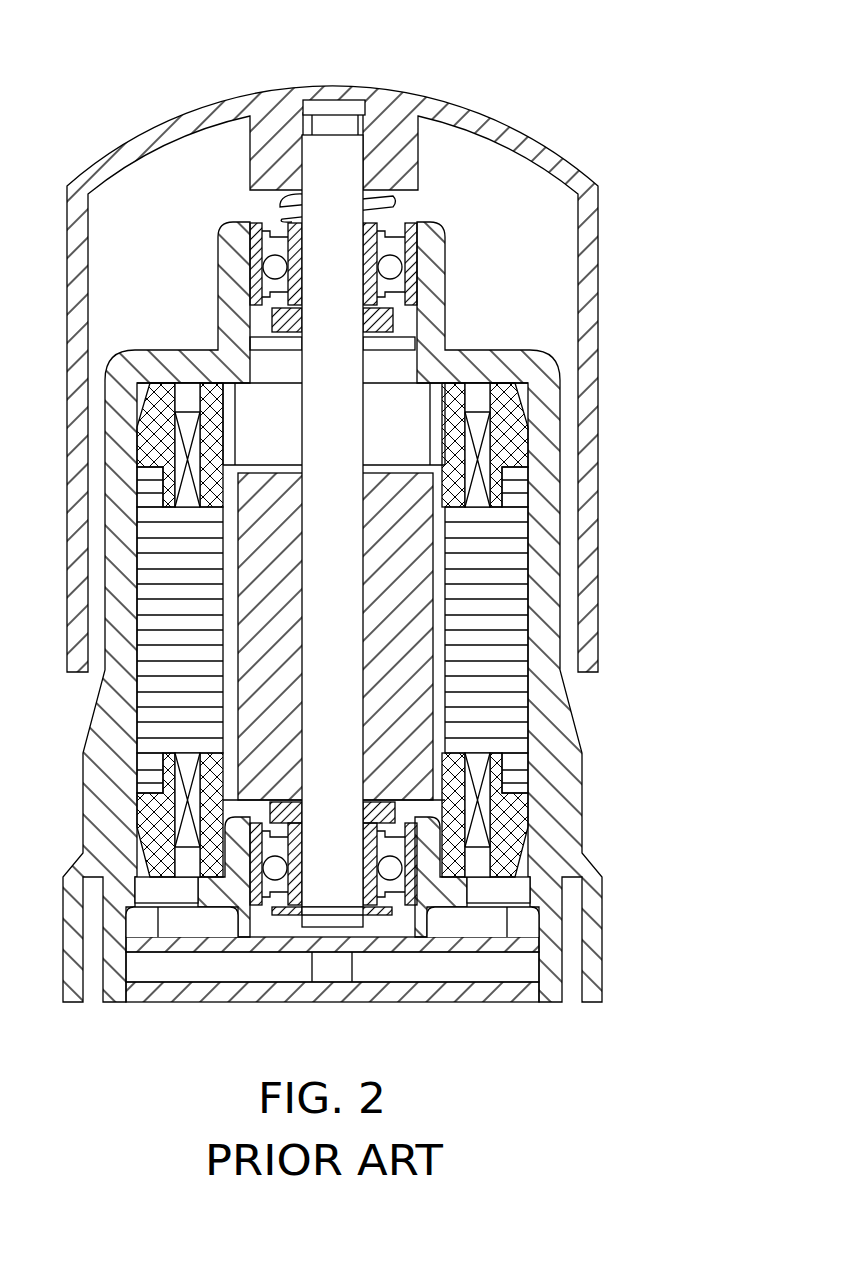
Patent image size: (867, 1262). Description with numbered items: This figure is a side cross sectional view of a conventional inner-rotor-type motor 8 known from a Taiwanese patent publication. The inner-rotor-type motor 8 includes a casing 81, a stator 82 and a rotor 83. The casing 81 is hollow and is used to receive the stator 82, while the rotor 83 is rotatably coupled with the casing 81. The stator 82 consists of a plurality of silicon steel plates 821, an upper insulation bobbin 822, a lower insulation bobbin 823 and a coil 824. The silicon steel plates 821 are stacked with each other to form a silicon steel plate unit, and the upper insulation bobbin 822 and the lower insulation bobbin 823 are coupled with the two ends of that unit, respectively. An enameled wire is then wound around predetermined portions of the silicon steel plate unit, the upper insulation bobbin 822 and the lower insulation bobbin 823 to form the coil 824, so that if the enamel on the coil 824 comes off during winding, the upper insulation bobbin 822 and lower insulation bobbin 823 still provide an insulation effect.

The inner-rotor-type motor 8 is at (552, 78).
The casing 81 is at (562, 742).
The stator 82 is at (529, 381).
The silicon steel plates 821 is at (512, 546).
The upper insulation bobbin 822 is at (508, 423).
The lower insulation bobbin 823 is at (509, 834).
The coil 824 is at (478, 420).
The rotor 83 is at (322, 150).